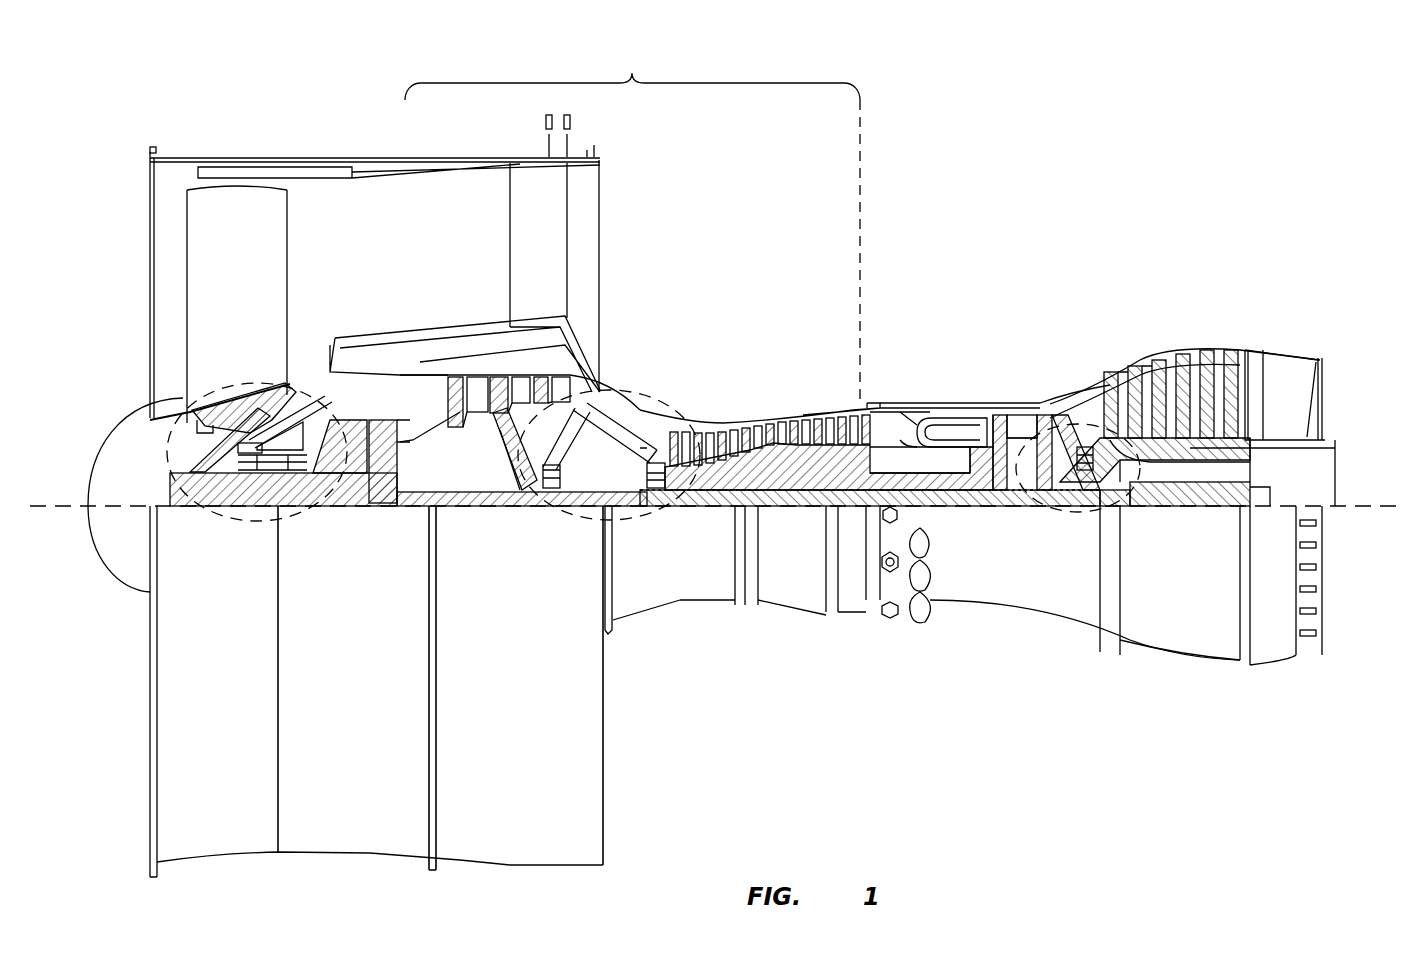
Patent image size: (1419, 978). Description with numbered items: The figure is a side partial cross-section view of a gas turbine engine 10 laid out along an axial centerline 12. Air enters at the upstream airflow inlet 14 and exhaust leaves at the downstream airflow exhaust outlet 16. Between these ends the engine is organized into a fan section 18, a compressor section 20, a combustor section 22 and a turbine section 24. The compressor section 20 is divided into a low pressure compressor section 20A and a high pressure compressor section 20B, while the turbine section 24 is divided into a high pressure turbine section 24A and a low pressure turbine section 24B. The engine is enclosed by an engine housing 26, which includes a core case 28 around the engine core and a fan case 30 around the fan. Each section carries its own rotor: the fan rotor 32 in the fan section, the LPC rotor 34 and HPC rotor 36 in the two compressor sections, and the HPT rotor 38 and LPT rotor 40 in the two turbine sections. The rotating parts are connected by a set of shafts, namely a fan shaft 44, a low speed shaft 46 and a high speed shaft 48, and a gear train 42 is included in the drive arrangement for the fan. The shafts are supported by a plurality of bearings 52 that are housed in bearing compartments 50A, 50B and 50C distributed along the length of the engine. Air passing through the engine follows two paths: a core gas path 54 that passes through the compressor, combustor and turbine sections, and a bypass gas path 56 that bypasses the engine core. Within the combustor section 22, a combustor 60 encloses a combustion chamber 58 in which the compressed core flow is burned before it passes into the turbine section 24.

The gas turbine engine 10 is at (1307, 128).
The axial centerline 12 is at (1395, 504).
The upstream airflow inlet 14 is at (150, 272).
The downstream airflow exhaust outlet 16 is at (1322, 400).
The fan section 18 is at (350, 137).
The compressor section 20 is at (632, 223).
The low pressure compressor section 20A is at (602, 295).
The high pressure compressor section 20B is at (860, 268).
The combustor section 22 is at (975, 268).
The turbine section 24 is at (1265, 205).
The high pressure turbine section 24A is at (1100, 268).
The low pressure turbine section 24B is at (1265, 268).
The engine housing 26 is at (615, 631).
The core case 28 is at (850, 612).
The fan case 30 is at (502, 865).
The fan rotor 32 is at (195, 420).
The LPC rotor 34 is at (497, 425).
The HPC rotor 36 is at (805, 470).
The HPT rotor 38 is at (1015, 496).
The LPT rotor 40 is at (1185, 450).
The gear train 42 is at (382, 506).
The fan shaft 44 is at (232, 506).
The low speed shaft 46 is at (1190, 508).
The high speed shaft 48 is at (955, 510).
The bearing compartment 50A is at (215, 400).
The bearing compartment 50B is at (645, 400).
The bearing compartment 50C is at (1060, 428).
The bearings 52 is at (282, 498).
The core gas path 54 is at (355, 372).
The bypass gas path 56 is at (392, 244).
The combustion chamber 58 is at (938, 435).
The combustor 60 is at (1010, 357).